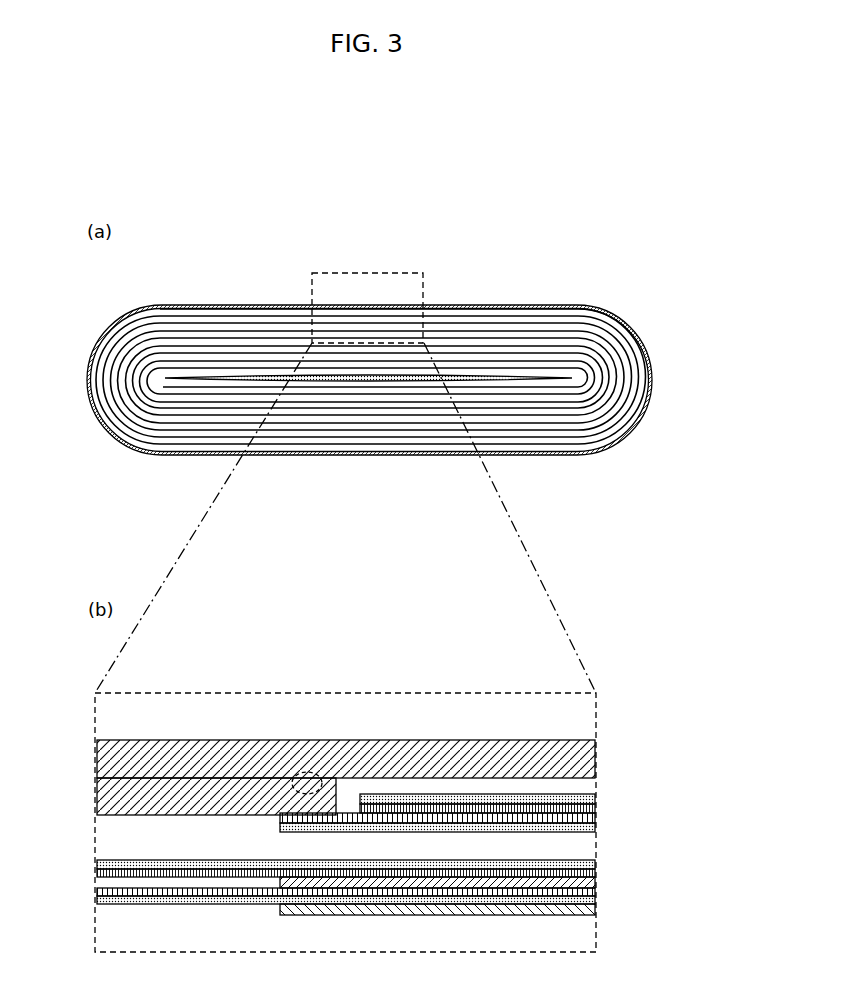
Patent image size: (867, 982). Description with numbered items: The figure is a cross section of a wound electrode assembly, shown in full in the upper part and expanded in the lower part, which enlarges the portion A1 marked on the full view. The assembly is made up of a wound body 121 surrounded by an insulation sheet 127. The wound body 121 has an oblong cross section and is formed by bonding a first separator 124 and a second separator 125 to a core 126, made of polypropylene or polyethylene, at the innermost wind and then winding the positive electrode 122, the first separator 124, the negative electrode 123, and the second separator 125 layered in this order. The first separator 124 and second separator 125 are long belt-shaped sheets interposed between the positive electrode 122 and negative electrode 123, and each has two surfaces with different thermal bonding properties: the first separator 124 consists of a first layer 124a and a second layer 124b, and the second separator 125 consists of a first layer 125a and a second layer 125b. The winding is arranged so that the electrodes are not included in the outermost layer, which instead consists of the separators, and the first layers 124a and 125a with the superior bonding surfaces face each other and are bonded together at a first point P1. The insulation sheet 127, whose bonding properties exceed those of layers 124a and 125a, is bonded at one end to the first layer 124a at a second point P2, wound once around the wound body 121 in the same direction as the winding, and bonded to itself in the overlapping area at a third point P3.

The wound body 121 is at (480, 343).
The positive electrode 122 is at (596, 909).
The negative electrode 123 is at (596, 882).
The first separator 124 is at (399, 882).
The first layer of the first separator 124a is at (148, 892).
The second layer of the first separator 124b is at (148, 901).
The second separator 125 is at (399, 831).
The first layer of the second separator 125a is at (155, 872).
The second layer of the second separator 125b is at (150, 862).
The core 126 is at (508, 388).
The insulation sheet 127 is at (482, 304).
The portion A1 is at (368, 273).
The first point P1 is at (402, 833).
The second point P2 is at (318, 833).
The third point P3 is at (336, 786).